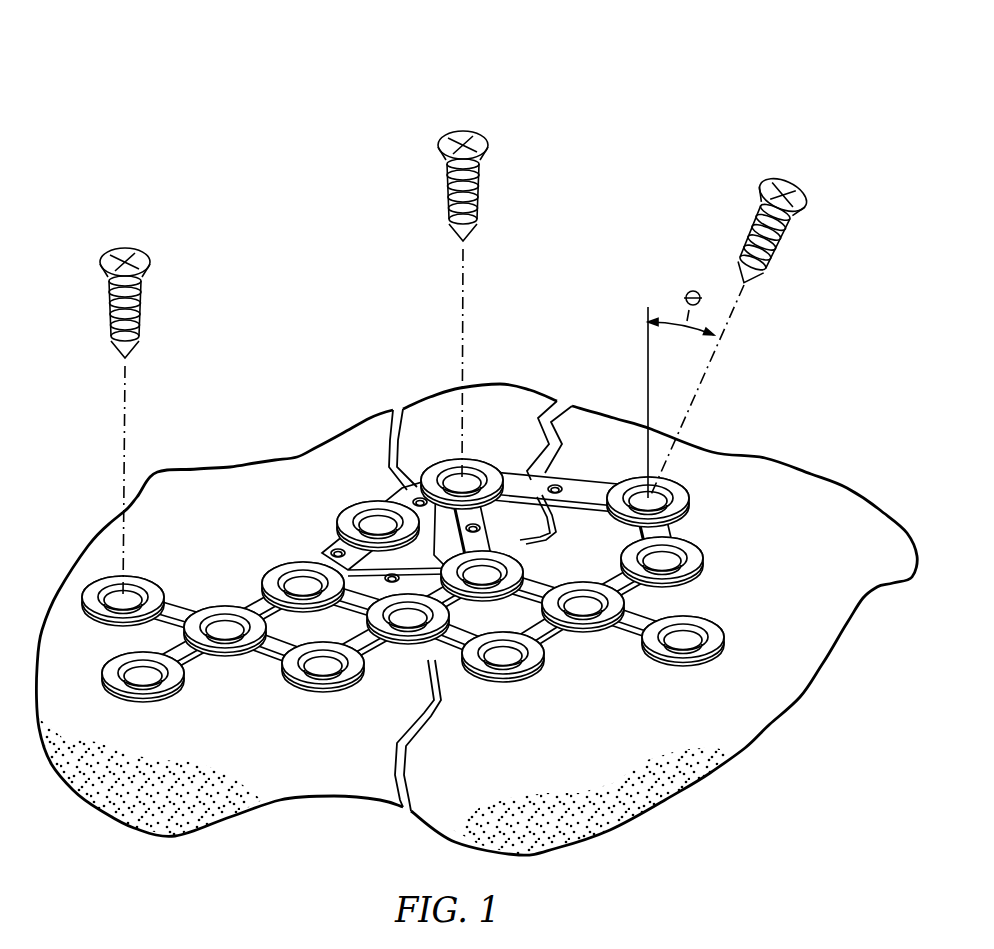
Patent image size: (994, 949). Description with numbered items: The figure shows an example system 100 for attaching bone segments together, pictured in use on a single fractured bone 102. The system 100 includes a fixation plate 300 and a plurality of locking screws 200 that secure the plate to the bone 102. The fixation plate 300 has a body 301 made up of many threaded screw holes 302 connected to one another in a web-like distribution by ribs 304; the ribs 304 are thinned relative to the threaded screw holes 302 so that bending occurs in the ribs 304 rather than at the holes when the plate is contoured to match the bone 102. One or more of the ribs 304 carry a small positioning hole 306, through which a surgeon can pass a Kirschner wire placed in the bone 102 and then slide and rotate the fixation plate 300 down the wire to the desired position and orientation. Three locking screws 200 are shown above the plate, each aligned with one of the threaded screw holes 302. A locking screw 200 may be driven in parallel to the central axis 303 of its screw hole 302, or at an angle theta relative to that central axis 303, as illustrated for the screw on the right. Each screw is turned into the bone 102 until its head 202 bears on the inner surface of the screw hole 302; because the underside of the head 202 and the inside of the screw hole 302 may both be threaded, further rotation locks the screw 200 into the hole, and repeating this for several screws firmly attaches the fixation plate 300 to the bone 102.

The system 100 is at (285, 70).
The bone 102 is at (814, 474).
The locking screw 200 is at (456, 338).
The head 202 is at (463, 133).
The fixation plate 300 is at (430, 559).
The body 301 is at (342, 535).
The threaded screw hole 302 is at (690, 640).
The central axis 303 is at (647, 350).
The rib 304 is at (540, 588).
The positioning hole 306 is at (557, 484).